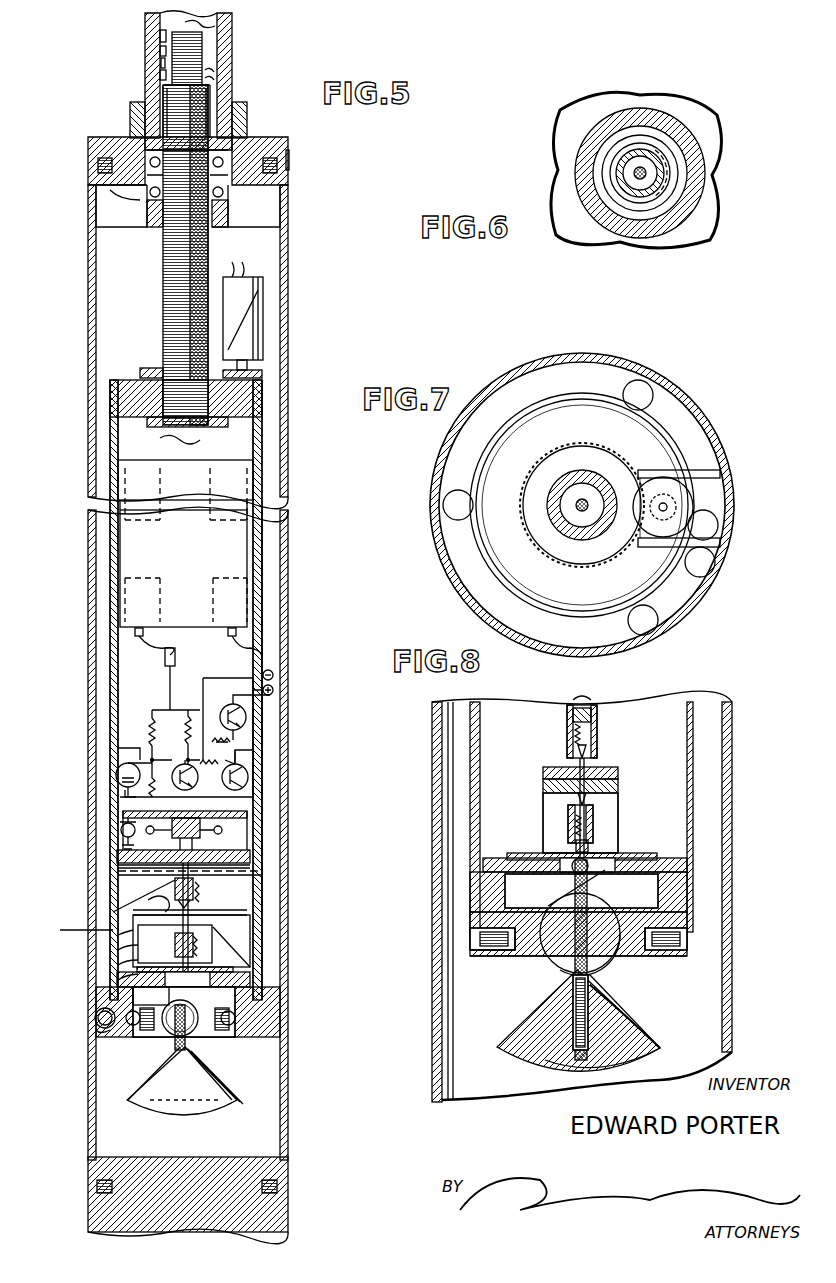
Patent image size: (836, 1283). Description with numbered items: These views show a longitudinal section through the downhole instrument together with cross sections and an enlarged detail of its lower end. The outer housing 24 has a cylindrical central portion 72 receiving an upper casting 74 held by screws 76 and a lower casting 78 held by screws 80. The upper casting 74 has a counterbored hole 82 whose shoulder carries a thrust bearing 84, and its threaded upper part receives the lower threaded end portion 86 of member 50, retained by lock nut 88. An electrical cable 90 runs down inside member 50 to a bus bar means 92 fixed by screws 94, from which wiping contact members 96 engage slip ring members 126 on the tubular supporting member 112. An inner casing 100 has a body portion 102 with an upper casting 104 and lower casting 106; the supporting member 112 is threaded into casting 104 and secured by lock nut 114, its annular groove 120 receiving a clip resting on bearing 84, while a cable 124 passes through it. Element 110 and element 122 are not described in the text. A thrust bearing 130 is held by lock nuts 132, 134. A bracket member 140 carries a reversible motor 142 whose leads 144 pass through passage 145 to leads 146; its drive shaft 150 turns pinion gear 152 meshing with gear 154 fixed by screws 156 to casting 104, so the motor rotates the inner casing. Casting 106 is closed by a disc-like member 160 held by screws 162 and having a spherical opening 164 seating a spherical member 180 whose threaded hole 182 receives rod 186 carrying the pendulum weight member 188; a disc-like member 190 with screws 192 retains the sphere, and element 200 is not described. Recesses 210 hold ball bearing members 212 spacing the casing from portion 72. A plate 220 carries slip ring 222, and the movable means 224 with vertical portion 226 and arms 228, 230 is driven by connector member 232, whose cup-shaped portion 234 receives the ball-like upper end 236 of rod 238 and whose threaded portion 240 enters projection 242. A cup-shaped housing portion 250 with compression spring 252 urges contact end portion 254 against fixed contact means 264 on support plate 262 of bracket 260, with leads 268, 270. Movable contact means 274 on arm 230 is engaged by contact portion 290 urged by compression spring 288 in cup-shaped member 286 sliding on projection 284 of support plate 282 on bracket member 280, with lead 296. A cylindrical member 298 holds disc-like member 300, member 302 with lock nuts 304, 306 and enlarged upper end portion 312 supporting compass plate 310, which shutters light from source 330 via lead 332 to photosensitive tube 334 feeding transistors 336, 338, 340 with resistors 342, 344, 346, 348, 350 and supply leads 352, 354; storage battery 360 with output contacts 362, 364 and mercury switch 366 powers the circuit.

In FIG. 5, the outer housing 24 is at (300, 722).
In FIG. 5, the member 50 is at (232, 28).
In FIG. 6, the member 50 is at (672, 110).
In FIG. 5, the central portion 72 is at (288, 540).
In FIG. 7, the central portion 72 is at (640, 370).
In FIG. 8, the central portion 72 is at (432, 800).
In FIG. 5, the casting 74 is at (270, 142).
In FIG. 5, the screws 76 is at (277, 166).
In FIG. 5, the casting 78 is at (280, 1226).
In FIG. 5, the screws 80 is at (282, 1188).
In FIG. 5, the counterbored hole 82 is at (147, 200).
In FIG. 5, the thrust bearing 84 is at (150, 186).
In FIG. 5, the lower threaded end portion 86 is at (247, 104).
In FIG. 5, the lock nut 88 is at (132, 102).
In FIG. 5, the electrical cable 90 is at (212, 22).
In FIG. 5, the bus bar means 92 is at (160, 36).
In FIG. 5, the screws 94 is at (160, 50).
In FIG. 5, the wiping contact members 96 is at (161, 62).
In FIG. 5, the inner casing 100 is at (268, 582).
In FIG. 5, the body portion 102 is at (262, 452).
In FIG. 7, the body portion 102 is at (530, 400).
In FIG. 8, the body portion 102 is at (470, 750).
In FIG. 5, the casting 104 is at (110, 386).
In FIG. 7, the casting 104 is at (585, 405).
In FIG. 5, the casting 106 is at (280, 1006).
In FIG. 8, the casting 106 is at (470, 895).
In FIG. 5, the nut flange 110 is at (136, 396).
In FIG. 5, the supporting member 112 is at (163, 258).
In FIG. 6, the supporting member 112 is at (660, 168).
In FIG. 7, the supporting member 112 is at (580, 482).
In FIG. 5, the lock nut 114 is at (228, 424).
In FIG. 5, the annular groove 120 is at (172, 138).
In FIG. 6, the annular groove 120 is at (634, 135).
In FIG. 5, the tube 122 is at (186, 111).
In FIG. 6, the tube 122 is at (668, 180).
In FIG. 5, the electrical cable member 124 is at (196, 439).
In FIG. 6, the electrical cable member 124 is at (640, 180).
In FIG. 7, the electrical cable member 124 is at (578, 512).
In FIG. 5, the slip ring members 126 is at (202, 45).
In FIG. 5, the thrust bearing 130 is at (150, 216).
In FIG. 5, the lock nut 132 is at (228, 212).
In FIG. 5, the lock nut 134 is at (228, 226).
In FIG. 5, the bracket member 140 is at (263, 330).
In FIG. 7, the bracket member 140 is at (700, 562).
In FIG. 5, the electric motor 142 is at (258, 300).
In FIG. 7, the electric motor 142 is at (692, 530).
In FIG. 5, the leads 144 is at (232, 277).
In FIG. 5, the passage 145 is at (276, 190).
In FIG. 5, the electrical leads 146 is at (214, 72).
In FIG. 5, the drive shaft 150 is at (247, 364).
In FIG. 7, the drive shaft 150 is at (676, 507).
In FIG. 5, the pinion gear 152 is at (262, 375).
In FIG. 7, the pinion gear 152 is at (720, 476).
In FIG. 5, the gear 154 is at (140, 385).
In FIG. 7, the gear 154 is at (600, 565).
In FIG. 5, the screws 156 is at (152, 368).
In FIG. 8, the disc-like member 160 is at (500, 952).
In FIG. 8, the screws 162 is at (470, 960).
In FIG. 8, the central opening 164 is at (615, 958).
In FIG. 8, the spherical member 180 is at (524, 950).
In FIG. 8, the threaded hole 182 is at (612, 984).
In FIG. 8, the rod 186 is at (573, 1005).
In FIG. 5, the pendulum weight member 188 is at (196, 1112).
In FIG. 8, the pendulum weight member 188 is at (530, 1050).
In FIG. 8, the disc-like member 190 is at (510, 932).
In FIG. 5, the screws 192 is at (130, 1032).
In FIG. 8, the bearing race 200 is at (646, 950).
In FIG. 5, the recesses 210 is at (96, 1030).
In FIG. 5, the ball bearing members 212 is at (96, 1012).
In FIG. 7, the ball bearing members 212 is at (653, 398).
In FIG. 5, the plate 220 is at (250, 982).
In FIG. 8, the plate 220 is at (680, 860).
In FIG. 5, the slip ring 222 is at (250, 968).
In FIG. 8, the slip ring 222 is at (656, 862).
In FIG. 5, the movable means 224 is at (118, 950).
In FIG. 5, the vertically extending portion 226 is at (118, 965).
In FIG. 8, the vertically extending portion 226 is at (612, 814).
In FIG. 5, the arm 228 is at (198, 960).
In FIG. 8, the arm 228 is at (552, 852).
In FIG. 5, the arm 230 is at (216, 904).
In FIG. 8, the arm 230 is at (618, 784).
In FIG. 5, the connector member 232 is at (195, 1017).
In FIG. 8, the connector member 232 is at (575, 965).
In FIG. 5, the cup-shaped portion 234 is at (160, 886).
In FIG. 8, the cup-shaped portion 234 is at (562, 896).
In FIG. 8, the ball-like upper end 236 is at (572, 868).
In FIG. 8, the rod 238 is at (620, 933).
In FIG. 8, the threaded portion 240 is at (594, 840).
In FIG. 8, the projection 242 is at (574, 830).
In FIG. 5, the cup-shaped housing portion 250 is at (152, 995).
In FIG. 8, the cup-shaped housing portion 250 is at (568, 814).
In FIG. 8, the compression spring 252 is at (595, 808).
In FIG. 5, the contact end portion 254 is at (195, 944).
In FIG. 8, the contact end portion 254 is at (568, 798).
In FIG. 5, the bracket 260 is at (262, 952).
In FIG. 5, the support plate 262 is at (250, 936).
In FIG. 8, the support plate 262 is at (543, 768).
In FIG. 5, the fixed contact means 264 is at (172, 952).
In FIG. 8, the fixed contact means 264 is at (543, 790).
In FIG. 5, the electrical lead 268 is at (118, 935).
In FIG. 5, the electrical lead 270 is at (118, 980).
In FIG. 5, the movable contact means 274 is at (159, 902).
In FIG. 8, the movable contact means 274 is at (618, 770).
In FIG. 5, the bracket member 280 is at (118, 876).
In FIG. 5, the support plate 282 is at (118, 858).
In FIG. 8, the support plate 282 is at (597, 700).
In FIG. 8, the projection 284 is at (573, 704).
In FIG. 5, the cup-shaped member 286 is at (197, 892).
In FIG. 8, the cup-shaped member 286 is at (597, 718).
In FIG. 8, the compression spring 288 is at (567, 724).
In FIG. 8, the contact portion 290 is at (592, 752).
In FIG. 5, the electrical lead 296 is at (75, 904).
In FIG. 5, the cylindrical member 298 is at (262, 748).
In FIG. 5, the disc-like member 300 is at (250, 856).
In FIG. 5, the member 302 is at (200, 844).
In FIG. 5, the lock nut 304 is at (173, 836).
In FIG. 5, the lock nut 306 is at (222, 898).
In FIG. 5, the compass plate 310 is at (250, 822).
In FIG. 5, the enlarged upper end portion 312 is at (190, 815).
In FIG. 5, the source of light 330 is at (121, 828).
In FIG. 5, the lead 332 is at (118, 748).
In FIG. 5, the photosensitive tube 334 is at (122, 765).
In FIG. 5, the transistor 336 is at (186, 760).
In FIG. 5, the transistor 338 is at (260, 768).
In FIG. 5, the transistor 340 is at (262, 700).
In FIG. 5, the resistor 342 is at (150, 758).
In FIG. 5, the resistor 344 is at (150, 716).
In FIG. 5, the resistor 346 is at (186, 714).
In FIG. 5, the resistor 348 is at (212, 766).
In FIG. 5, the resistor 350 is at (220, 725).
In FIG. 5, the lead 352 is at (218, 672).
In FIG. 5, the lead 354 is at (273, 692).
In FIG. 5, the storage battery 360 is at (120, 556).
In FIG. 5, the output contact 362 is at (142, 600).
In FIG. 5, the output contact 364 is at (219, 600).
In FIG. 5, the mercury switch 366 is at (185, 640).